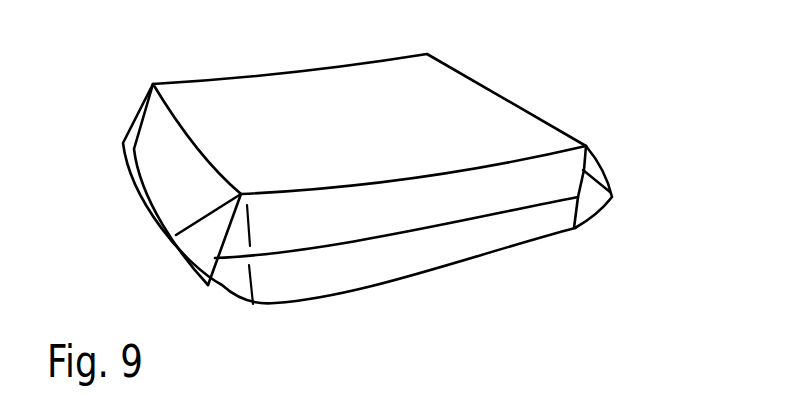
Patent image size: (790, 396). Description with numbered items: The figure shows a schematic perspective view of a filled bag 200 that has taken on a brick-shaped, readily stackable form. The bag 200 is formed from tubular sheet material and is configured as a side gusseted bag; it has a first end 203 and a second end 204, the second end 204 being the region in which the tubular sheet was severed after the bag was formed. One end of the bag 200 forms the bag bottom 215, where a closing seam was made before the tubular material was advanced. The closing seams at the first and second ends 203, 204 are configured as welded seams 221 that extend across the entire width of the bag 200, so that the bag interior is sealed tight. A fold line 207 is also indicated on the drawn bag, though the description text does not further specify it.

The bag 200 is at (108, 65).
The first end 203 is at (598, 151).
The second end 204 is at (133, 215).
The fold line 207 is at (207, 210).
The bag bottom 215 is at (183, 182).
The welded seams 221 is at (157, 230).